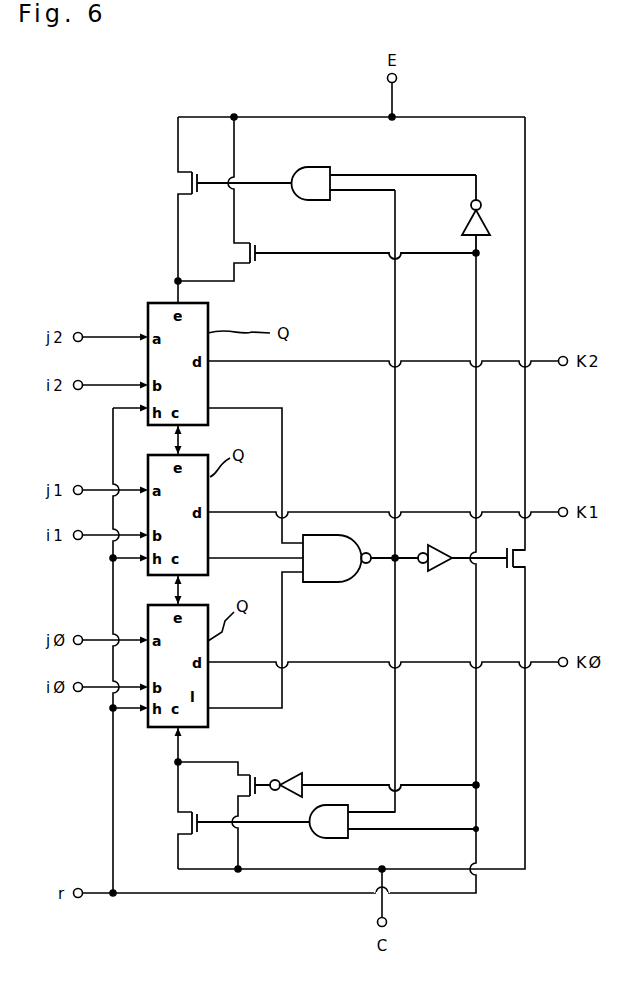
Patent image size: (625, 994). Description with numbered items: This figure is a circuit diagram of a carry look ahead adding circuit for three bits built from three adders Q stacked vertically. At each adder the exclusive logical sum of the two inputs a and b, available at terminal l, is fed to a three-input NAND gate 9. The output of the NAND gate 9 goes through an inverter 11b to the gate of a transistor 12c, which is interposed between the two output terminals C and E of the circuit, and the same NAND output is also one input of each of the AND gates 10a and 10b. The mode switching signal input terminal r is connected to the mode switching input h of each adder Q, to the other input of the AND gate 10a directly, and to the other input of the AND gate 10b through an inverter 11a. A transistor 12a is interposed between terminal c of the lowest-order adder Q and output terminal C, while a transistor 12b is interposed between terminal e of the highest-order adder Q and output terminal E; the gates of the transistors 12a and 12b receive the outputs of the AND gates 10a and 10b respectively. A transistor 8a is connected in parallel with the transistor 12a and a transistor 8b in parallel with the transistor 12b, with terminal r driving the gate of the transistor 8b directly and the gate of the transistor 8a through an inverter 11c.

The transistor 8a is at (258, 773).
The transistor 8b is at (258, 239).
The three-input NAND gate 9 is at (338, 582).
The AND gate 10a is at (338, 840).
The AND gate 10b is at (322, 167).
The inverter 11a is at (487, 233).
The inverter 11b is at (437, 572).
The inverter 11c is at (302, 772).
The transistor 12a is at (175, 822).
The transistor 12b is at (178, 182).
The transistor 12c is at (528, 563).